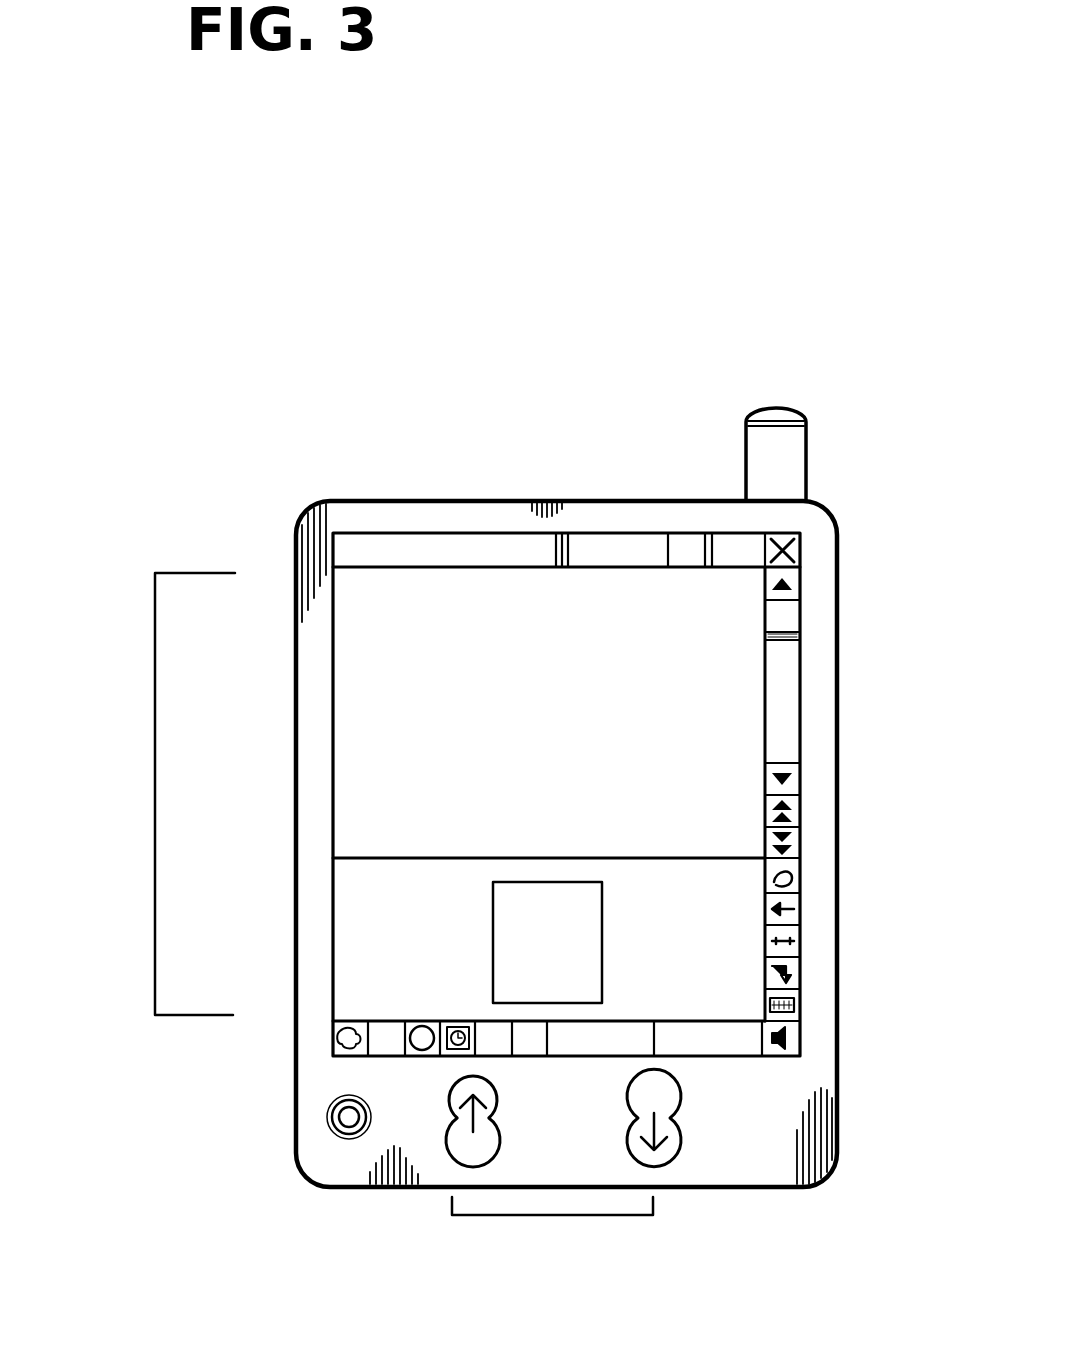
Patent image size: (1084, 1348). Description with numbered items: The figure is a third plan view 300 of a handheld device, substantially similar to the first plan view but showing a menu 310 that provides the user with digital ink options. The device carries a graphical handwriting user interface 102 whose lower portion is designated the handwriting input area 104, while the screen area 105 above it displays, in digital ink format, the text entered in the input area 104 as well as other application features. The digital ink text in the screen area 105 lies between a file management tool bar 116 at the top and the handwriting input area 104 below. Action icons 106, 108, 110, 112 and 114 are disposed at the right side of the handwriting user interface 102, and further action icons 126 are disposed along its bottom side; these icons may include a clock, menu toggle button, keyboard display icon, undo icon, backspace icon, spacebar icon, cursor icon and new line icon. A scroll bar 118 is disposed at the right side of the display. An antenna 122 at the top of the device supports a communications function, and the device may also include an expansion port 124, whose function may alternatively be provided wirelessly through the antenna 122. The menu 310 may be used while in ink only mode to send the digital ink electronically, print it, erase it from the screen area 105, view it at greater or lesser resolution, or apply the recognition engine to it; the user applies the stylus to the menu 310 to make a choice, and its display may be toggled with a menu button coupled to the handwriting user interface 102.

The third plan view 300 is at (580, 413).
The graphical handwriting user interface 102 is at (162, 783).
The handwriting input area 104 is at (334, 916).
The screen area 105 is at (334, 691).
The action icon 106 is at (800, 1009).
The action icon 108 is at (800, 978).
The action icon 110 is at (800, 947).
The action icon 112 is at (800, 915).
The action icon 114 is at (800, 883).
The file management tool bar 116 is at (374, 533).
The scroll bar 118 is at (800, 745).
The antenna 122 is at (806, 471).
The expansion port 124 is at (552, 1241).
The action icons 126 is at (566, 1034).
The menu 310 is at (495, 956).